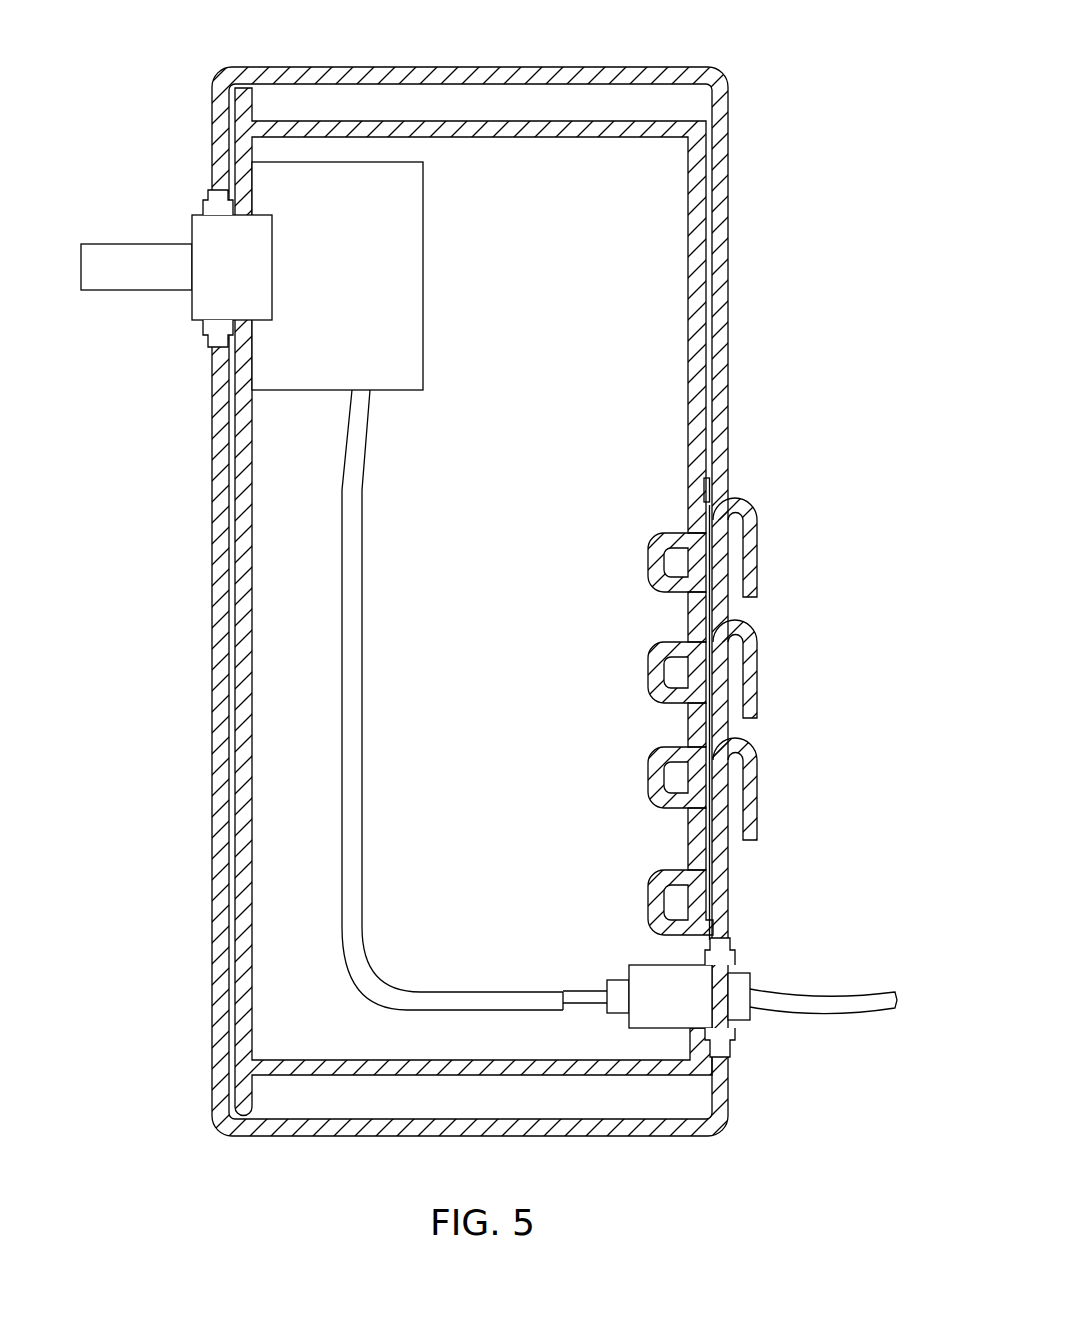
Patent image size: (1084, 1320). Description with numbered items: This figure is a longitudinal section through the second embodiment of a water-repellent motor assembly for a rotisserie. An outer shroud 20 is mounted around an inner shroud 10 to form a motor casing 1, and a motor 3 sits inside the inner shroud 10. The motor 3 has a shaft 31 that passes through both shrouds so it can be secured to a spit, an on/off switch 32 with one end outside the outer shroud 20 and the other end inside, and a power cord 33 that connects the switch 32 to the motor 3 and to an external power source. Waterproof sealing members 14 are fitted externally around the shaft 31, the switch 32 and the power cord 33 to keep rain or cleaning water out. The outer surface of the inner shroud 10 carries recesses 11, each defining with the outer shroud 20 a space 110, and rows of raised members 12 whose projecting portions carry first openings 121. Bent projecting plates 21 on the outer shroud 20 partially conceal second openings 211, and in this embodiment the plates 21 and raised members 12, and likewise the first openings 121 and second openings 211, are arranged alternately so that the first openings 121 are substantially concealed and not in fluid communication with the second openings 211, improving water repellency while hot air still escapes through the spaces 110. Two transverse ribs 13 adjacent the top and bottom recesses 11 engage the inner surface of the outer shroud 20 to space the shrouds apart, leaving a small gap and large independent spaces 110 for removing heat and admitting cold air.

The motor casing 1 is at (790, 77).
The motor 3 is at (316, 178).
The inner shroud 10 is at (590, 125).
The recess 11 is at (655, 542).
The raised member 12 is at (663, 583).
The transverse rib 13 is at (705, 495).
The waterproof sealing member 14 is at (203, 202).
The outer shroud 20 is at (680, 73).
The projecting plate 21 is at (752, 568).
The shaft 31 is at (122, 255).
The on/off switch 32 is at (643, 980).
The power cord 33 is at (858, 1000).
The space 110 is at (697, 672).
The first opening 121 is at (723, 607).
The second opening 211 is at (720, 795).